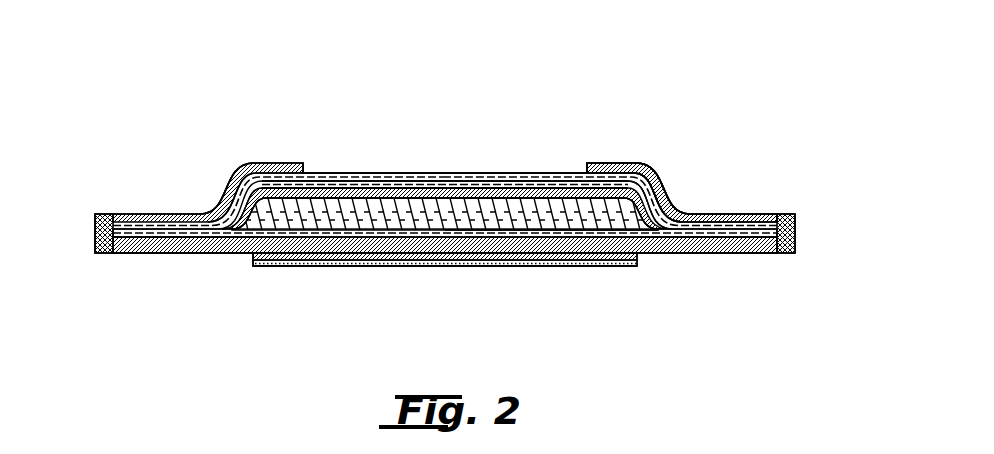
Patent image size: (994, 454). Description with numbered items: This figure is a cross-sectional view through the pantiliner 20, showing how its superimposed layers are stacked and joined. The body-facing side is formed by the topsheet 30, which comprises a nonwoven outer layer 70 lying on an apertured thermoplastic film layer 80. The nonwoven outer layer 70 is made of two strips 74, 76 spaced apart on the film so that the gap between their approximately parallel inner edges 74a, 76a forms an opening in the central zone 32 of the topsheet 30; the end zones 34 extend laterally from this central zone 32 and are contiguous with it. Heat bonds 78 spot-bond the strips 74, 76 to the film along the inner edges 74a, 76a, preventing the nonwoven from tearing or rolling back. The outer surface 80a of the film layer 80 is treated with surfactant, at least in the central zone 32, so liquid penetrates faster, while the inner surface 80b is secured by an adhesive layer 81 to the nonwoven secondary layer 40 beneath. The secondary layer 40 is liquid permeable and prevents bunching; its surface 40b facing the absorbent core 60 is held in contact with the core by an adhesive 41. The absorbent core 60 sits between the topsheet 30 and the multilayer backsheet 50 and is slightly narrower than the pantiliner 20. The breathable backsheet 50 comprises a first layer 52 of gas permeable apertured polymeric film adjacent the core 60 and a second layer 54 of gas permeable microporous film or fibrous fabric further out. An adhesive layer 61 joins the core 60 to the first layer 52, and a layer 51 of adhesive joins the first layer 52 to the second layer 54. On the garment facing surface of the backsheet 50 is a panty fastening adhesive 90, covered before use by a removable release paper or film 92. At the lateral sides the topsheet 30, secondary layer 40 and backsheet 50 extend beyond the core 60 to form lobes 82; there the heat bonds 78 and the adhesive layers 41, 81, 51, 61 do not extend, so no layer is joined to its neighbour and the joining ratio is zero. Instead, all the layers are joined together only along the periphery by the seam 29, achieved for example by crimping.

The pantiliner 20 is at (152, 94).
The seam 29 is at (100, 213).
The topsheet 30 is at (674, 195).
The central zone 32 is at (441, 152).
The end zones 34 is at (226, 165).
The nonwoven secondary layer 40 is at (698, 213).
The surface of the nonwoven secondary layer 40b is at (458, 205).
The adhesive 41 is at (332, 183).
The multilayer backsheet 50 is at (678, 255).
The layer of adhesive 51 is at (492, 267).
The first layer 52 is at (200, 255).
The second layer 54 is at (236, 255).
The absorbent core 60 is at (574, 200).
The adhesive layer 61 is at (611, 266).
The nonwoven outer layer 70 is at (130, 222).
The strip 74 is at (180, 222).
The inner edge 74a is at (318, 176).
The strip 76 is at (618, 178).
The inner edge 76a is at (598, 178).
The heat bonds 78 is at (270, 163).
The apertured thermoplastic film layer 80 is at (510, 190).
The outer surface 80a is at (402, 192).
The inner surface 80b is at (356, 190).
The adhesive layer 81 is at (551, 183).
The lobes 82 is at (124, 262).
The panty fastening adhesive 90 is at (545, 267).
The release paper or film 92 is at (432, 267).